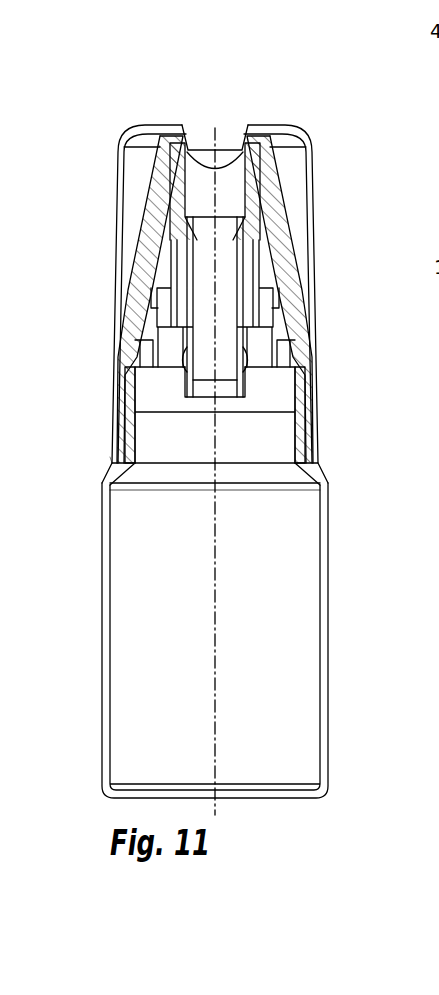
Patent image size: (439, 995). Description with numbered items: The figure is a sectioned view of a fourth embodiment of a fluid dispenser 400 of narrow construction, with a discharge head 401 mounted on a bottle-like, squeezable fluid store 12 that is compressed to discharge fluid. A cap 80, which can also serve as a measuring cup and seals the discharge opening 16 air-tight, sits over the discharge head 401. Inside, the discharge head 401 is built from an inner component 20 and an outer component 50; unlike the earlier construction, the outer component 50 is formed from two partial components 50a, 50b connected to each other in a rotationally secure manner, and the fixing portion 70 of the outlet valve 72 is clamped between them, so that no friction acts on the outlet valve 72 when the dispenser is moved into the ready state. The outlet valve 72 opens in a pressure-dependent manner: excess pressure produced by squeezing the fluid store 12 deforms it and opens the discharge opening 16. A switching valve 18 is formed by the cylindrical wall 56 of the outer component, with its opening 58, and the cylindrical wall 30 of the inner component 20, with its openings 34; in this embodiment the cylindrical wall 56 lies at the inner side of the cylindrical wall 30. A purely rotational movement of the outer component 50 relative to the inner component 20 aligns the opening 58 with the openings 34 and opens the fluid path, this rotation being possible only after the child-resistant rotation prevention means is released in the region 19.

The fluid dispenser 400 is at (88, 113).
The discharge head 401 is at (97, 415).
The fluid store 12 is at (88, 582).
The inner component 20 is at (112, 457).
The outer component 50 is at (124, 333).
The partial component 50a is at (257, 183).
The partial component 50b is at (287, 220).
The cap 80 is at (117, 240).
The region 19 is at (142, 347).
The discharge opening 16 is at (211, 162).
The fixing portion 70 is at (235, 163).
The outlet valve 72 is at (216, 168).
The cylindrical wall 56 is at (193, 310).
The switching valve 18 is at (182, 367).
The cylindrical wall 30 is at (247, 397).
The opening 58 is at (192, 360).
The openings 34 is at (192, 366).